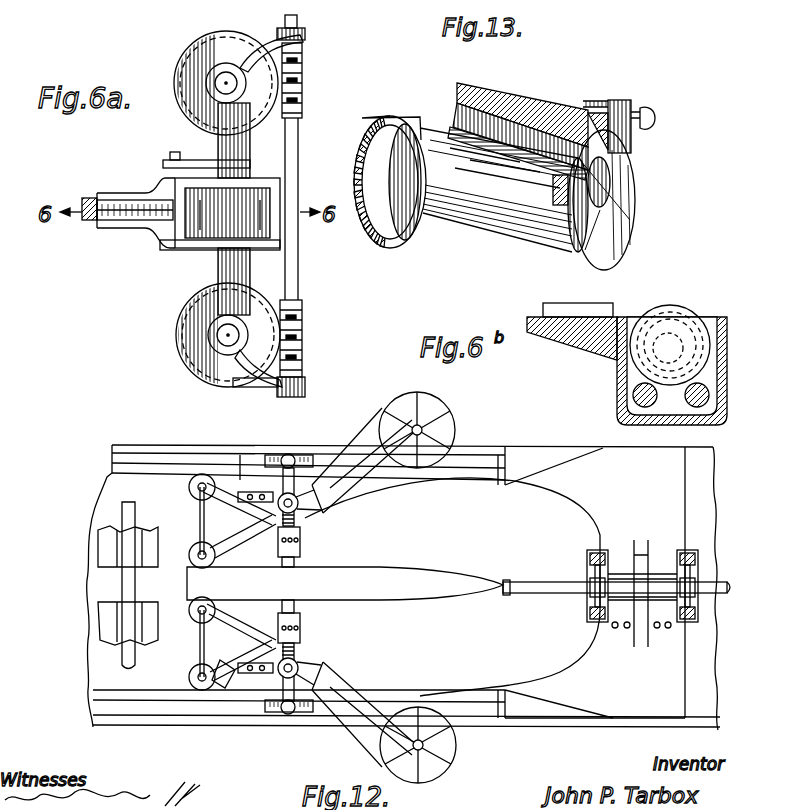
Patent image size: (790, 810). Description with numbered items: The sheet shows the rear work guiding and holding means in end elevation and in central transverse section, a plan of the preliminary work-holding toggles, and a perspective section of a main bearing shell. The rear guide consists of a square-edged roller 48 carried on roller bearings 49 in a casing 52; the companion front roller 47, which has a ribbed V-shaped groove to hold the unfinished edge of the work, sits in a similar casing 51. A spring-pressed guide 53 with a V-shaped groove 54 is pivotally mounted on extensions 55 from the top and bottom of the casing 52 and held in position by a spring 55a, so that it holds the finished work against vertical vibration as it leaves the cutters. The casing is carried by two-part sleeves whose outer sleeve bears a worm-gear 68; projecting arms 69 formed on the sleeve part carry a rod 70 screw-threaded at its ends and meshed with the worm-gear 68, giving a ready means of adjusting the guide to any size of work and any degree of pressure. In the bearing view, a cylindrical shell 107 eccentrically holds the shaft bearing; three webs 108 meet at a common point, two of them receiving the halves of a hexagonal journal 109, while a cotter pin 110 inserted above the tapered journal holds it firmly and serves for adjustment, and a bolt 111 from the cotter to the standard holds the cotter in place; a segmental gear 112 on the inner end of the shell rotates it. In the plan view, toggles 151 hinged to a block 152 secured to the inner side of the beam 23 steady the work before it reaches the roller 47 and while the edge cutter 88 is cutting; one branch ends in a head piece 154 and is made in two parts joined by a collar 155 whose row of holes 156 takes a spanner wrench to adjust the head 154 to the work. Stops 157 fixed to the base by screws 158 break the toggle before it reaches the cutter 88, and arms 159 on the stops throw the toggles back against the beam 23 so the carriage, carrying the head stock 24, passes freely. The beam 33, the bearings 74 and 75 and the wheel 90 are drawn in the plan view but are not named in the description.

In FIG. 6A, the worm-gear 68 is at (205, 45).
In FIG. 6A, the extensions 55 is at (218, 272).
In FIG. 6B, the extensions 55 is at (688, 335).
In FIG. 6A, the spring 55a is at (195, 160).
In FIG. 6B, the spring 55a is at (648, 318).
In FIG. 6A, the roller 48 is at (275, 204).
In FIG. 6B, the roller 48 is at (665, 305).
In FIG. 6A, the casing 52 is at (280, 246).
In FIG. 6B, the casing 52 is at (727, 385).
In FIG. 6A, the spring-pressed guide 53 is at (114, 193).
In FIG. 6B, the spring-pressed guide 53 is at (592, 355).
In FIG. 6A, the V-shaped groove 54 is at (125, 220).
In FIG. 6B, the V-shaped groove 54 is at (572, 310).
In FIG. 6A, the rod 70 is at (298, 284).
In FIG. 6A, the projecting arms 69 is at (265, 388).
In FIG. 13, the webs 108 is at (555, 250).
In FIG. 13, the segmental gears 112 is at (368, 135).
In FIG. 13, the cylindrical shells 107 is at (518, 95).
In FIG. 13, the cotter pin 110 is at (619, 100).
In FIG. 13, the bolt 111 is at (656, 115).
In FIG. 13, the hexagonal journal 109 is at (636, 182).
In FIG. 6B, the roller bearings 49 is at (692, 407).
In FIG. 6B, the casing 51 is at (618, 413).
In FIG. 12, the beam 23 is at (215, 728).
In FIG. 12, the roller 47 is at (120, 597).
In FIG. 12, the beam 33 is at (458, 583).
In FIG. 12, the head stock 24 is at (465, 590).
In FIG. 12, the bearing 74 is at (587, 565).
In FIG. 12, the bearing 75 is at (698, 612).
In FIG. 12, the wheel 90 is at (458, 745).
In FIG. 12, the block 152 is at (290, 455).
In FIG. 12, the toggles 151 is at (300, 507).
In FIG. 12, the head piece 154 is at (302, 548).
In FIG. 12, the collar 155 is at (302, 632).
In FIG. 12, the stops 157 is at (196, 490).
In FIG. 12, the edge cutter 88 is at (192, 552).
In FIG. 12, the holes 156 is at (262, 614).
In FIG. 12, the screws 158 is at (245, 673).
In FIG. 12, the arms 159 is at (190, 680).